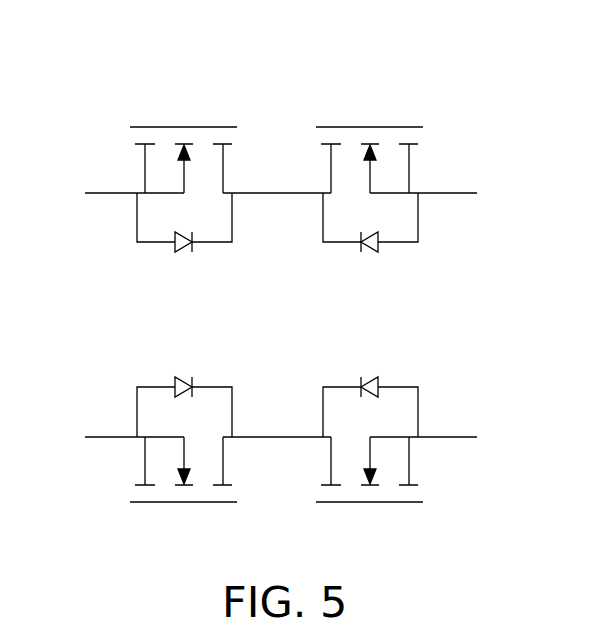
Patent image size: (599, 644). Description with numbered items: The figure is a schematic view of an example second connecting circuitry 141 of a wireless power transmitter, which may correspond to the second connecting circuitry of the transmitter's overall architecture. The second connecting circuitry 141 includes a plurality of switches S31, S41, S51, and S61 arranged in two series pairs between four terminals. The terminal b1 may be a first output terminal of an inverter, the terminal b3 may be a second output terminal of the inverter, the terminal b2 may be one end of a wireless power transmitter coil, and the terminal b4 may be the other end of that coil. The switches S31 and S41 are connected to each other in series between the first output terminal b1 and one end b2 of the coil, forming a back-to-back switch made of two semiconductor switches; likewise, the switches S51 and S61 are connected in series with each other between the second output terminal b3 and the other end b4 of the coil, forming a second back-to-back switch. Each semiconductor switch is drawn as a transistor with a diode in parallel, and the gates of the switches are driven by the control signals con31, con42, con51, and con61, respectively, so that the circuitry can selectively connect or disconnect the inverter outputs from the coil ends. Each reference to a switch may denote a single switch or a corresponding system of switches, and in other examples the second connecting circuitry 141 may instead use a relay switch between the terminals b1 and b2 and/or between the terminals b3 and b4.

The second connecting circuitry 141 is at (258, 36).
The control signal for switch S31 con31 is at (184, 127).
The control signal for switch S41 con42 is at (370, 127).
The control signal for switch S51 con51 is at (184, 502).
The control signal for switch S61 con61 is at (370, 502).
The switch S31 is at (183, 216).
The switch S41 is at (369, 216).
The switch S51 is at (183, 413).
The switch S61 is at (369, 413).
The first output terminal b1 is at (96, 191).
The one end of the coil b2 is at (462, 191).
The second output terminal b3 is at (96, 435).
The other end of the coil b4 is at (462, 435).